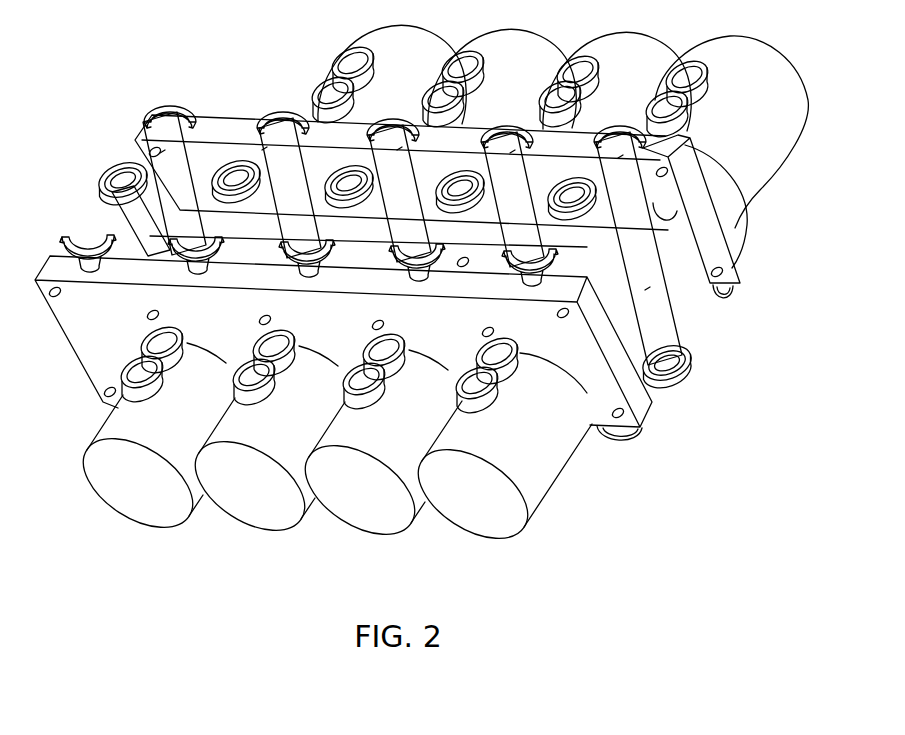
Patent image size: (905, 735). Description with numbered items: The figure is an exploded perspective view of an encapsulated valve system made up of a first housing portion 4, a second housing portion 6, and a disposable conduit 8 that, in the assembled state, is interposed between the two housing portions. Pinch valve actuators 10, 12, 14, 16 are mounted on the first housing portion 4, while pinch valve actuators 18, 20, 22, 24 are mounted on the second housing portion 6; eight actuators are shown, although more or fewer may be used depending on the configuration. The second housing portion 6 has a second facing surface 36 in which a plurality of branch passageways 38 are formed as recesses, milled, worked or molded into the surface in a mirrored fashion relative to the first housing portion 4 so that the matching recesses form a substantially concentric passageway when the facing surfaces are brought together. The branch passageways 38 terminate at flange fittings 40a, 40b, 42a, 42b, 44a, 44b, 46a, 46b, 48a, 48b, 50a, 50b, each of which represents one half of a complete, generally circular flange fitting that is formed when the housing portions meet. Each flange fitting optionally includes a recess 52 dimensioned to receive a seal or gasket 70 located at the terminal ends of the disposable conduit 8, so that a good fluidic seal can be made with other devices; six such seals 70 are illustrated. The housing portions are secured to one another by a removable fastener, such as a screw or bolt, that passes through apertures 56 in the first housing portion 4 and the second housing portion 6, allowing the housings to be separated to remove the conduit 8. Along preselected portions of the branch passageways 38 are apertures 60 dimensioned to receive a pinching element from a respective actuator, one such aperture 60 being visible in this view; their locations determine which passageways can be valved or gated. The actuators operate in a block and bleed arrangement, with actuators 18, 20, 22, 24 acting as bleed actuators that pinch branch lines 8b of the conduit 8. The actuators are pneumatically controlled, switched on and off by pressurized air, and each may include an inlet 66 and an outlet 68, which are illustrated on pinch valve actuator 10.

The first housing portion 4 is at (650, 403).
The second housing portion 6 is at (747, 258).
The disposable conduit 8 is at (118, 200).
The branch lines 8b is at (139, 239).
The pinch valve actuator 10 is at (490, 530).
The pinch valve actuator 12 is at (372, 525).
The pinch valve actuator 14 is at (258, 520).
The pinch valve actuator 16 is at (155, 520).
The pinch valve actuator 18 is at (765, 62).
The pinch valve actuator 20 is at (633, 48).
The pinch valve actuator 22 is at (525, 44).
The pinch valve actuator 24 is at (405, 36).
The second facing surface 36 is at (707, 238).
The branch passageways 38 is at (160, 153).
The flange fitting 40a is at (638, 440).
The flange fitting 40b is at (733, 298).
The flange fitting 42a is at (543, 285).
The flange fitting 42b is at (622, 120).
The flange fitting 44a is at (432, 280).
The flange fitting 44b is at (517, 117).
The flange fitting 46a is at (299, 276).
The flange fitting 46b is at (402, 110).
The flange fitting 48a is at (207, 272).
The flange fitting 48b is at (292, 106).
The flange fitting 50a is at (103, 268).
The flange fitting 50b is at (178, 97).
The recess 52 is at (70, 235).
The apertures 56 is at (153, 150).
The apertures 60 is at (687, 208).
The inlet 66 is at (495, 395).
The outlet 68 is at (505, 372).
The seal or gasket 70 is at (110, 180).